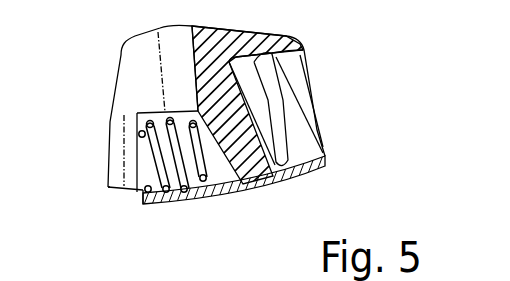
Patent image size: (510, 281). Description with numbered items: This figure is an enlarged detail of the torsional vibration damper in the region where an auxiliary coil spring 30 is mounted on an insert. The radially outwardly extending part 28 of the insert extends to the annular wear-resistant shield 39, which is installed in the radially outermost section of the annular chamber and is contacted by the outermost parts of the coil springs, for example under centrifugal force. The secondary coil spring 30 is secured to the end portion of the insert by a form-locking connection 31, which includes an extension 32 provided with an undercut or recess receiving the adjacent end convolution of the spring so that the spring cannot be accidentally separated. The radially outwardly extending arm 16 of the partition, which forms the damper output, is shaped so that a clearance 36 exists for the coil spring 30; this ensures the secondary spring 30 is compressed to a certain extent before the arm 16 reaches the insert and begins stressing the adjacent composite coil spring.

The arm 16 is at (132, 86).
The radially outwardly extending part 28 is at (240, 168).
The coil spring 30 is at (153, 204).
The form-locking connection 31 is at (168, 152).
The extension 32 is at (182, 204).
The clearance 36 is at (137, 191).
The wear-resistant shield 39 is at (278, 183).